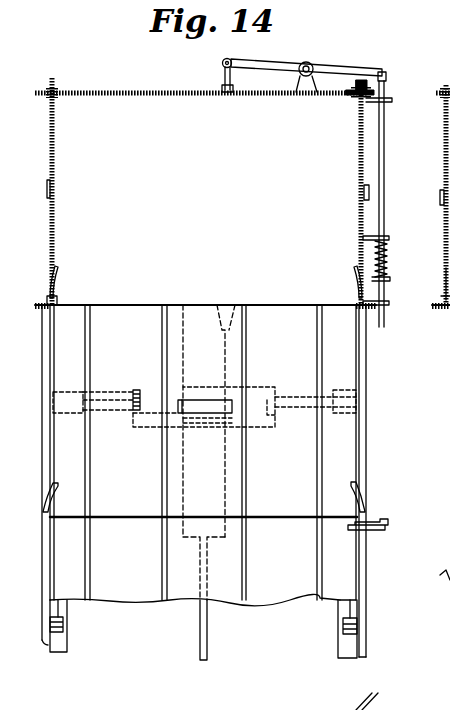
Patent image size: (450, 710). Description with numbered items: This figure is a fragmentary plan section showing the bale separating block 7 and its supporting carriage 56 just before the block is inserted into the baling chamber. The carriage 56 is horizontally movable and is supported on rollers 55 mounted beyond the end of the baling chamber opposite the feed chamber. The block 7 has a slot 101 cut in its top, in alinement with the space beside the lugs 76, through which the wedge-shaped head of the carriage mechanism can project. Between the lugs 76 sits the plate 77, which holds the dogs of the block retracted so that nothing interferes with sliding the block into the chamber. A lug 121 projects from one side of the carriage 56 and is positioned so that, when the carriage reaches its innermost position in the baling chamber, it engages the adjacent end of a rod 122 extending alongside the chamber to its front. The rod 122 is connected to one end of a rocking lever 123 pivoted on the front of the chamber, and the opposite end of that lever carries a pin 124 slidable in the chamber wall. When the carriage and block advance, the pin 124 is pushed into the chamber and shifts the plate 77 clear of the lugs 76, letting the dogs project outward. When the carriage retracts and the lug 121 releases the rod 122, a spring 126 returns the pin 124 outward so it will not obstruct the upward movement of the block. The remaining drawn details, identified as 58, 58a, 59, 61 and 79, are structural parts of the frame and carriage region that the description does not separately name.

The bale separating block 7 is at (340, 467).
The rollers 55 is at (342, 632).
The carriage 56 is at (68, 646).
The spring clip 58 is at (58, 282).
The spring clip 58a is at (47, 497).
The cross bar 59 is at (55, 503).
The bracket 61 is at (52, 193).
The lugs 76 is at (178, 403).
The plate 77 is at (210, 418).
The rod 79 is at (373, 691).
The slot 101 is at (206, 405).
The lug 121 is at (387, 520).
The rod 122 is at (383, 203).
The rocking lever 123 is at (340, 72).
The pin 124 is at (226, 88).
The spring 126 is at (387, 263).